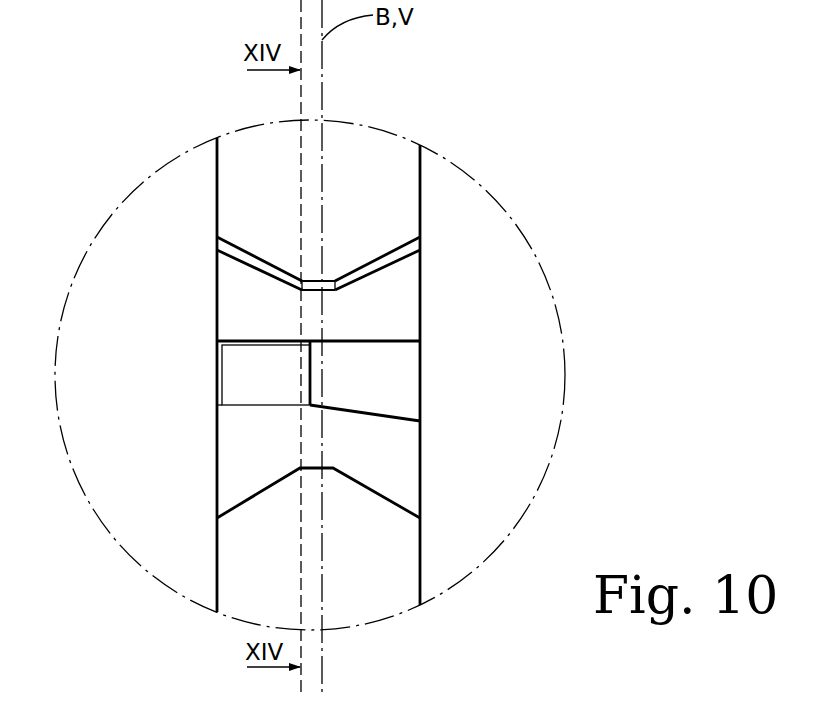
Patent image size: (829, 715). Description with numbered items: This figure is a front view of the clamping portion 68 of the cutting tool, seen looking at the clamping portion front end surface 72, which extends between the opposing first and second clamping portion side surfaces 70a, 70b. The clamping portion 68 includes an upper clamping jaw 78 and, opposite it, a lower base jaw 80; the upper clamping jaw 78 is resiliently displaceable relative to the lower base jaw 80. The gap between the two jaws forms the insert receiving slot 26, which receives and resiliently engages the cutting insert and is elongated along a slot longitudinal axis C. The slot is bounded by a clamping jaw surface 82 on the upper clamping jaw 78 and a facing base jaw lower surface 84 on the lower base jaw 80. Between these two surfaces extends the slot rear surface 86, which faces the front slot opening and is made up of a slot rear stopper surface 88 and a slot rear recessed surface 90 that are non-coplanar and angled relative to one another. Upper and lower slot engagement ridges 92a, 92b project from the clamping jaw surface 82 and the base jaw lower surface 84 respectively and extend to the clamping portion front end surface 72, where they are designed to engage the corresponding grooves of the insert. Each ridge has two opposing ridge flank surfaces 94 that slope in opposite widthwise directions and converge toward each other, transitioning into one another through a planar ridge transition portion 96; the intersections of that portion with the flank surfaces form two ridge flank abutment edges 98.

The insert receiving slot 26 is at (525, 350).
The clamping portion 68 is at (497, 140).
The first clamping portion side surface 70a is at (216, 176).
The second clamping portion side surface 70b is at (421, 200).
The clamping portion front end surface 72 is at (273, 226).
The upper clamping jaw 78 is at (385, 180).
The lower base jaw 80 is at (237, 573).
The clamping jaw surface 82 is at (235, 258).
The base jaw lower surface 84 is at (244, 497).
The slot rear surface 86 is at (197, 390).
The slot rear stopper surface 88 is at (267, 397).
The slot rear recessed surface 90 is at (398, 406).
The upper slot engagement ridge 92a is at (403, 275).
The lower slot engagement ridge 92b is at (401, 480).
The ridge flank surfaces 94 is at (238, 257).
The ridge transition portion 96 is at (310, 292).
The ridge flank abutment edges 98 is at (336, 292).
The slot longitudinal axis C is at (321, 376).